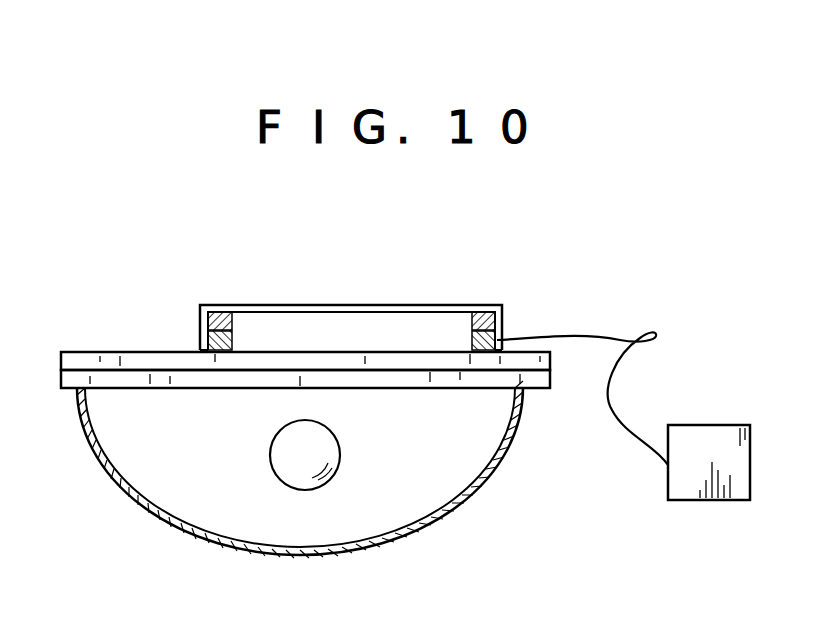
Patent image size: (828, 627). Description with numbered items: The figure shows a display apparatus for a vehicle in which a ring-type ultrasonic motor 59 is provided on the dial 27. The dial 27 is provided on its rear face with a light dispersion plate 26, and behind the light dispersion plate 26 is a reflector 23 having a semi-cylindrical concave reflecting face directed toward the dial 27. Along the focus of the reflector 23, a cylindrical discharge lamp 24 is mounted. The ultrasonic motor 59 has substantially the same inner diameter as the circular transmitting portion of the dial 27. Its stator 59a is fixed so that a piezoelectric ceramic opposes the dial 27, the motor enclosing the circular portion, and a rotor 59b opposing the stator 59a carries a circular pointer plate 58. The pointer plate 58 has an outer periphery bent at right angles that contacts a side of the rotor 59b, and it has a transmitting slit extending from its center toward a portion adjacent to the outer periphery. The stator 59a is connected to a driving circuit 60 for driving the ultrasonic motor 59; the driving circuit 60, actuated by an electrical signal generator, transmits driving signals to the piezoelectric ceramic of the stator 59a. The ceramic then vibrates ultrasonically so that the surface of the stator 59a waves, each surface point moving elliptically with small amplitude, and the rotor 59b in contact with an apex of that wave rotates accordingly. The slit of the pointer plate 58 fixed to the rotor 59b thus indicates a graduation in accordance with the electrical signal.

The reflector 23 is at (377, 547).
The cylindrical discharge lamp 24 is at (275, 473).
The light dispersion plate 26 is at (63, 390).
The dial 27 is at (69, 360).
The pointer plate 58 is at (391, 305).
The ultrasonic motor 59 is at (302, 297).
The stator 59a is at (208, 347).
The rotor 59b is at (232, 308).
The driving circuit 60 is at (717, 500).